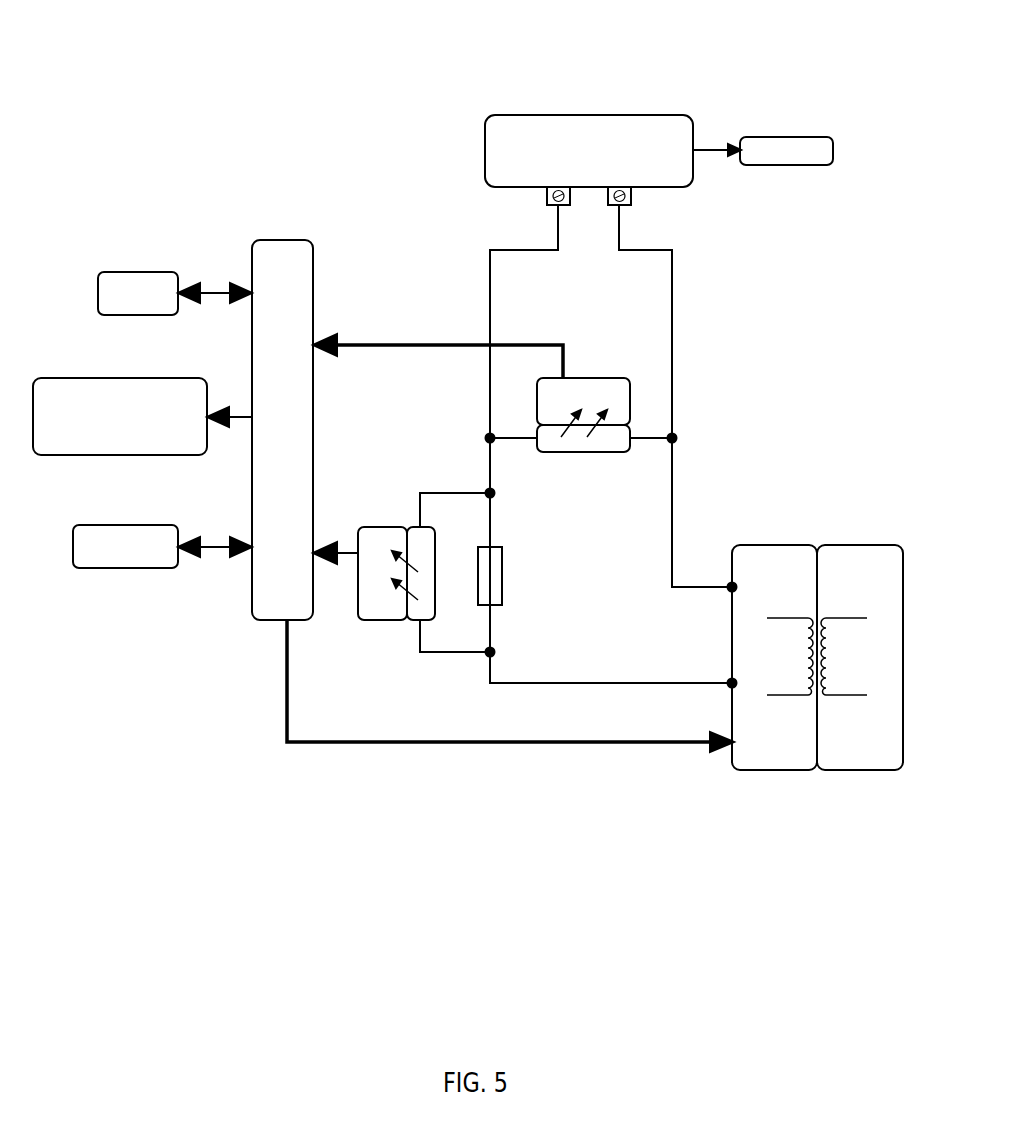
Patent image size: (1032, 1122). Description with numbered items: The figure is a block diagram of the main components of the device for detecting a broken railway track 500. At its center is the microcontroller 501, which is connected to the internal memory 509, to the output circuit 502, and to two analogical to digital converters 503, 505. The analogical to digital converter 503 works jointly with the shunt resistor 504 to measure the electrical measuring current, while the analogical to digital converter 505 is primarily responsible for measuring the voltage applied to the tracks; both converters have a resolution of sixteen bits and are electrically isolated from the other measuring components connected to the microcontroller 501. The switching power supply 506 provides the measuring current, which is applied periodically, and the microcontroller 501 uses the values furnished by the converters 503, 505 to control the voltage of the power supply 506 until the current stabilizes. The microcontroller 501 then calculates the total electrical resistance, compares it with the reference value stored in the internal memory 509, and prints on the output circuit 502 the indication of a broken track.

The device for detecting a broken railway track 500 is at (466, 150).
The microcontroller 501 is at (284, 232).
The output circuit 502 is at (786, 112).
The analogical to digital converter 503 is at (382, 630).
The shunt resistor 504 is at (510, 571).
The analogical to digital converter 505 is at (610, 368).
The switching power supply 506 is at (778, 780).
The internal memory 509 is at (142, 264).